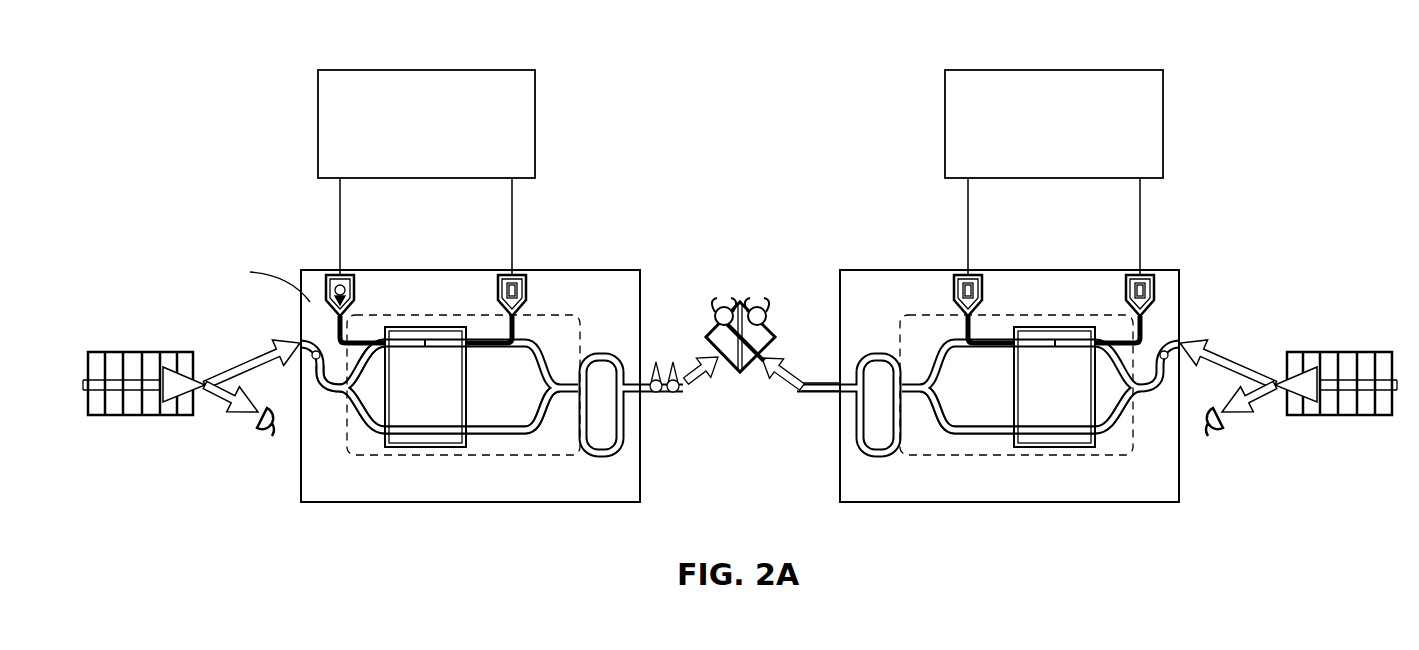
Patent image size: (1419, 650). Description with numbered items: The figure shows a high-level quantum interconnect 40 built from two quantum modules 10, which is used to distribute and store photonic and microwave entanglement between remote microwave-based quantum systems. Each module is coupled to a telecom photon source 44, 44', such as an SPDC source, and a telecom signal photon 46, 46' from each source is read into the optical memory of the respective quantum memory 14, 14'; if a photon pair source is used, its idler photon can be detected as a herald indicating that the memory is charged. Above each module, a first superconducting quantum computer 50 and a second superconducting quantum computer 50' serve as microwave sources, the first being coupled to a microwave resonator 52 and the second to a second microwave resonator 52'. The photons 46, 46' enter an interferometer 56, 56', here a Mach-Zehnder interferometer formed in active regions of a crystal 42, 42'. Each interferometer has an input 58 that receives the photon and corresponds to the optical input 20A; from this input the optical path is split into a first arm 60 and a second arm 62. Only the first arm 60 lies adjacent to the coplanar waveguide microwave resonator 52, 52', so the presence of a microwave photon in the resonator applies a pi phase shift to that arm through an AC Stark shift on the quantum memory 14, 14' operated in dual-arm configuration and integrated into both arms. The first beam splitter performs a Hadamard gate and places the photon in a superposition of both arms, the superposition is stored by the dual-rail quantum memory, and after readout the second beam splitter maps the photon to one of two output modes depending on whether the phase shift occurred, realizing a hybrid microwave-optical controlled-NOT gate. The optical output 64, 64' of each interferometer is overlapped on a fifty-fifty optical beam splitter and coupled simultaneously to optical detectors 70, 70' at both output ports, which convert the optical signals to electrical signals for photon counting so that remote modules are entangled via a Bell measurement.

The quantum interconnect 40 is at (170, 49).
The telecom photon source 44 is at (143, 385).
The second telecom photon source 44' is at (1340, 366).
The optical input 20A is at (260, 352).
The telecom signal photon 46 is at (274, 330).
The second telecom signal photon 46' is at (1209, 330).
The first superconducting quantum computer 50 is at (426, 108).
The second superconducting quantum computer 50' is at (1057, 108).
The microwave resonator 52 is at (426, 260).
The second microwave resonator 52' is at (1054, 260).
The first arm 60 is at (528, 340).
The quantum module 10 is at (588, 270).
The quantum memory 14 is at (490, 357).
The second quantum memory 14' is at (1052, 357).
The optical output 64 is at (679, 343).
The second optical output 64' is at (801, 343).
The optical detector 70 is at (711, 285).
The second optical detector 70' is at (767, 285).
The crystal 42 is at (458, 387).
The second crystal 42' is at (1027, 415).
The input 58 is at (343, 390).
The second arm 62 is at (503, 440).
The interferometer 56 is at (463, 433).
The second interferometer 56' is at (1016, 433).